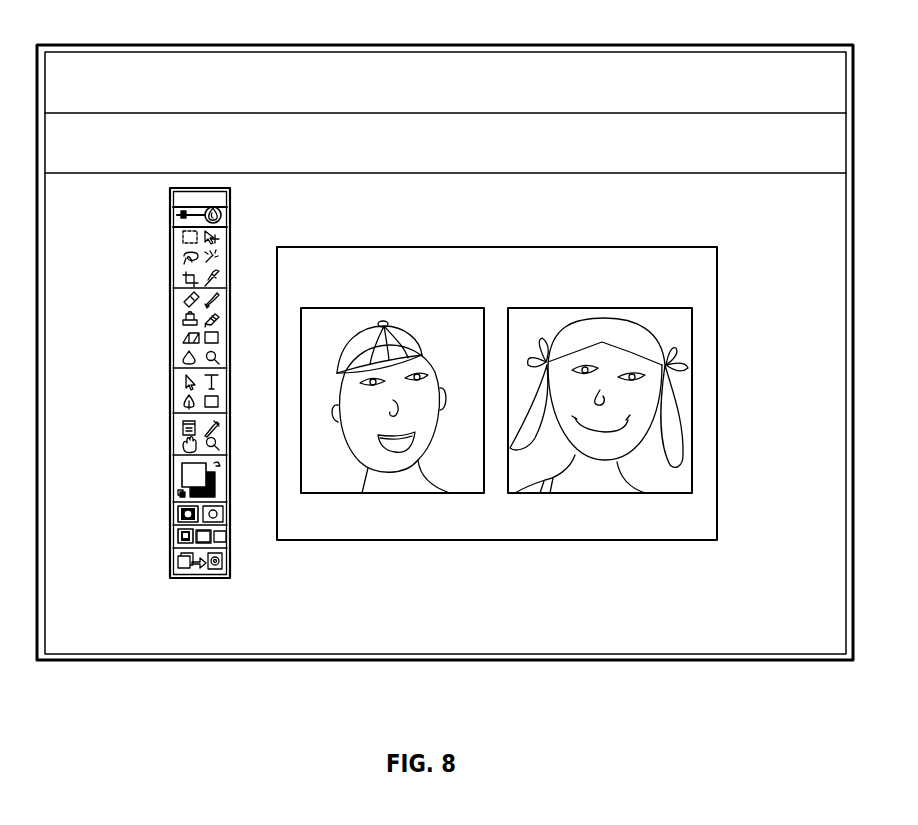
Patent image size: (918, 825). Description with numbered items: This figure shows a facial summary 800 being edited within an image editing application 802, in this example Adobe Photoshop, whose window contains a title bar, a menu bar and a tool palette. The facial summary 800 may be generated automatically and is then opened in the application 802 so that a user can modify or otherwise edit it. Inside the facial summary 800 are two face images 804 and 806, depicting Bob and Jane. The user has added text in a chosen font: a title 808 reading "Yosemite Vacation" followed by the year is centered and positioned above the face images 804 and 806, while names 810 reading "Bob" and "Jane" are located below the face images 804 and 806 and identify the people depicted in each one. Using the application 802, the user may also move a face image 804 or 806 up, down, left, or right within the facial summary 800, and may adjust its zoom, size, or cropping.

The facial summary 800 is at (497, 247).
The application 802 is at (470, 45).
The face image 804 is at (301, 405).
The face image 806 is at (717, 408).
The title 808 is at (674, 282).
The names 810 is at (386, 527).